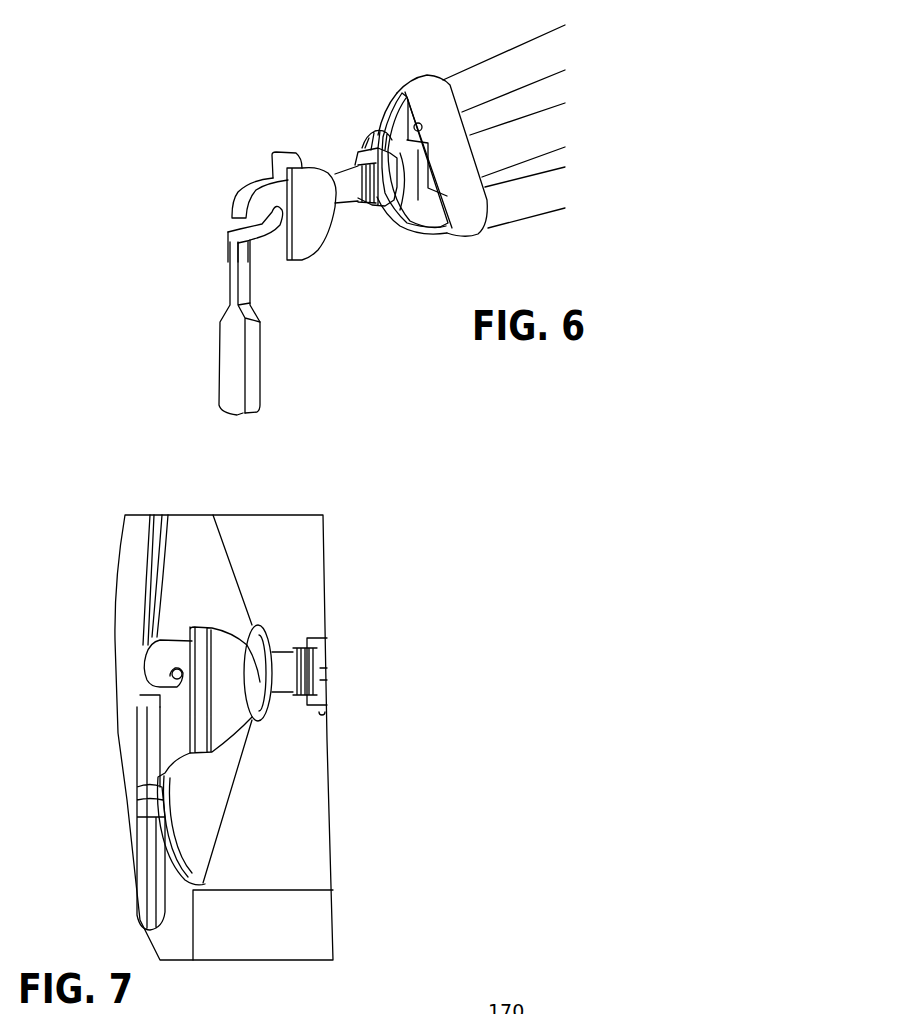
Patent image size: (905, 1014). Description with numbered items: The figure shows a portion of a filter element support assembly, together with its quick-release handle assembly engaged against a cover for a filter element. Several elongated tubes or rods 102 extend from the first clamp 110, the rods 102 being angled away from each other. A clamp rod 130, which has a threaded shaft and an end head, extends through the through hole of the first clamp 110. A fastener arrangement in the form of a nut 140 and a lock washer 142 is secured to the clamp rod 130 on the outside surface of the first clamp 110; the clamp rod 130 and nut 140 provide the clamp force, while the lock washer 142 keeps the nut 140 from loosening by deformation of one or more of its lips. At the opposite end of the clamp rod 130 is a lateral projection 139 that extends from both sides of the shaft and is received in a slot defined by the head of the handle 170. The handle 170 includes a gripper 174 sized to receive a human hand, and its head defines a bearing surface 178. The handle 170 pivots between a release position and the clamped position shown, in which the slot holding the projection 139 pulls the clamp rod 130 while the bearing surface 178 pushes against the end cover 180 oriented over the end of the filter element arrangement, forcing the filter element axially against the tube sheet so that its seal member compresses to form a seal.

In FIG. 6, the rods 102 is at (473, 73).
In FIG. 6, the first clamp 110 is at (421, 83).
In FIG. 6, the clamp rod 130 is at (348, 200).
In FIG. 7, the lateral projection 139 is at (170, 676).
In FIG. 6, the nut 140 is at (377, 200).
In FIG. 6, the lock washer 142 is at (365, 138).
In FIG. 6, the handle 170 is at (228, 359).
In FIG. 7, the handle 170 is at (138, 900).
In FIG. 7, the gripper 174 is at (133, 868).
In FIG. 7, the bearing surface 178 is at (260, 700).
In FIG. 7, the end cover 180 is at (163, 586).